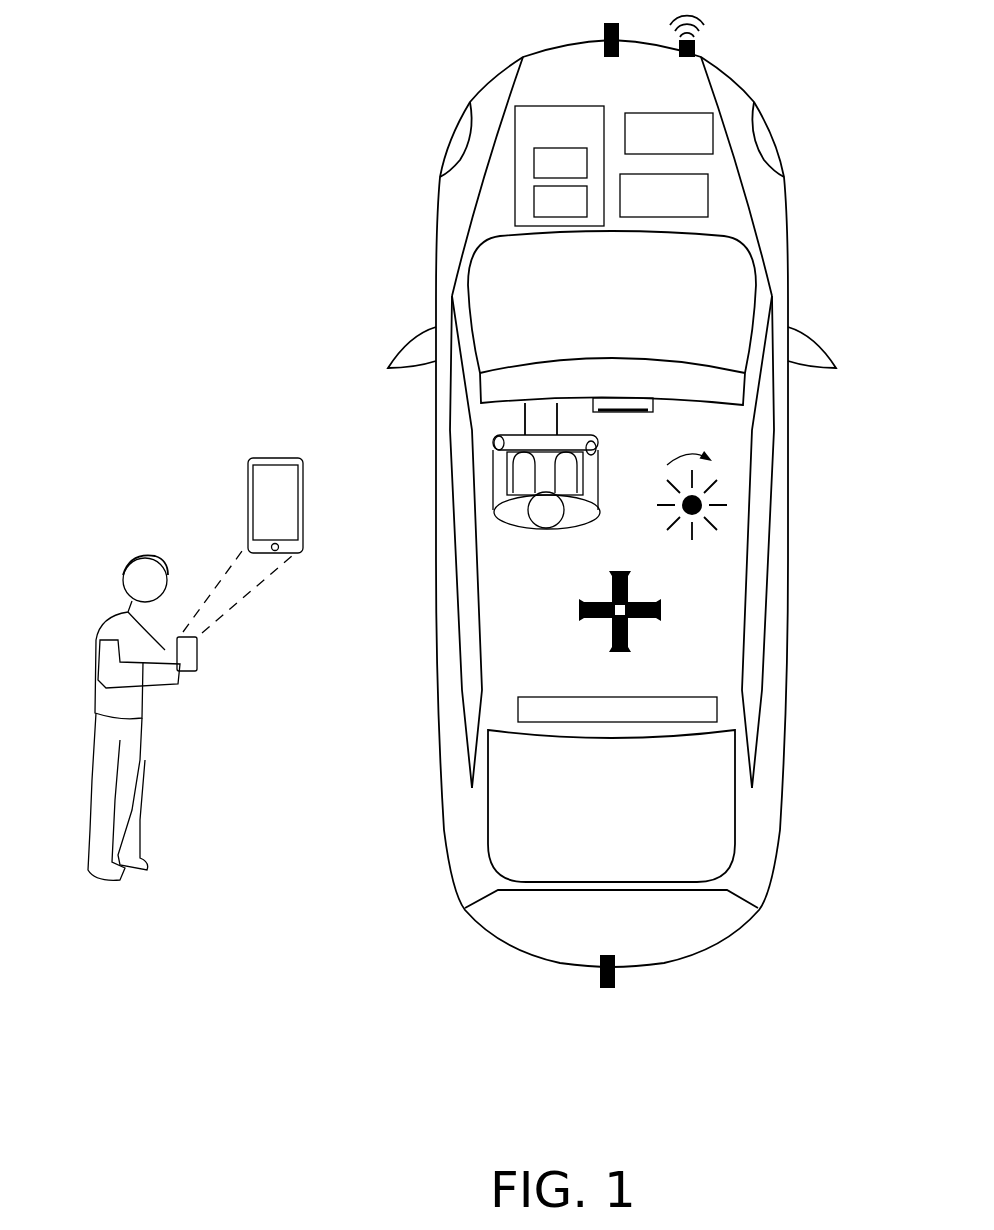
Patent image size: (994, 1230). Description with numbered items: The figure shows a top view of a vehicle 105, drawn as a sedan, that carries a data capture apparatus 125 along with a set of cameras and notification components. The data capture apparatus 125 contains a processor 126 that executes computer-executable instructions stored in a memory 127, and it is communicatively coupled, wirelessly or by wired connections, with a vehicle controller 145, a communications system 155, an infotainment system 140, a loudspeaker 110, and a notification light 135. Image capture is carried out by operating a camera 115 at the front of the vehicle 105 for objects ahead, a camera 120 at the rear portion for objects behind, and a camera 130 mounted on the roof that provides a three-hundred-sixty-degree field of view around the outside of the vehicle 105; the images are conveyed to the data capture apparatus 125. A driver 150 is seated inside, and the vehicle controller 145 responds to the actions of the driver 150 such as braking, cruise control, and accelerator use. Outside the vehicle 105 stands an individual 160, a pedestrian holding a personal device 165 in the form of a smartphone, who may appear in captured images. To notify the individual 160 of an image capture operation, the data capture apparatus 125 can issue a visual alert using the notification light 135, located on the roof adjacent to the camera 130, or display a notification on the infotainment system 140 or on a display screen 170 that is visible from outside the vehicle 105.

The vehicle 105 is at (418, 88).
The loudspeaker 110 is at (715, 39).
The camera 115 is at (612, 58).
The camera 120 is at (616, 968).
The data capture apparatus 125 is at (590, 138).
The processor 126 is at (580, 176).
The memory 127 is at (580, 215).
The camera 130 is at (557, 630).
The notification light 135 is at (704, 558).
The infotainment system 140 is at (612, 398).
The vehicle controller 145 is at (687, 146).
The driver 150 is at (568, 528).
The communications system 155 is at (682, 208).
The individual 160 is at (58, 616).
The personal device 165 is at (245, 508).
The display screen 170 is at (632, 692).